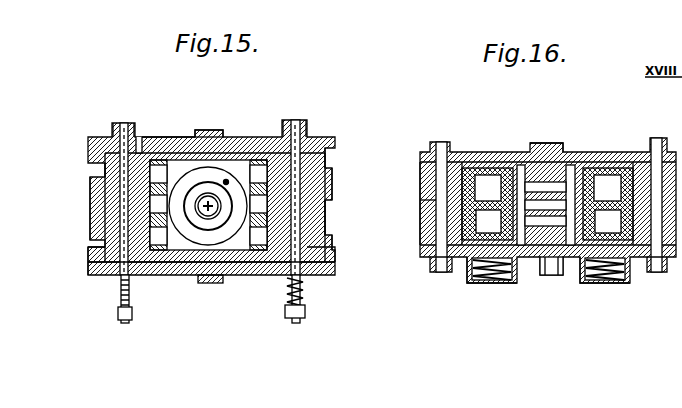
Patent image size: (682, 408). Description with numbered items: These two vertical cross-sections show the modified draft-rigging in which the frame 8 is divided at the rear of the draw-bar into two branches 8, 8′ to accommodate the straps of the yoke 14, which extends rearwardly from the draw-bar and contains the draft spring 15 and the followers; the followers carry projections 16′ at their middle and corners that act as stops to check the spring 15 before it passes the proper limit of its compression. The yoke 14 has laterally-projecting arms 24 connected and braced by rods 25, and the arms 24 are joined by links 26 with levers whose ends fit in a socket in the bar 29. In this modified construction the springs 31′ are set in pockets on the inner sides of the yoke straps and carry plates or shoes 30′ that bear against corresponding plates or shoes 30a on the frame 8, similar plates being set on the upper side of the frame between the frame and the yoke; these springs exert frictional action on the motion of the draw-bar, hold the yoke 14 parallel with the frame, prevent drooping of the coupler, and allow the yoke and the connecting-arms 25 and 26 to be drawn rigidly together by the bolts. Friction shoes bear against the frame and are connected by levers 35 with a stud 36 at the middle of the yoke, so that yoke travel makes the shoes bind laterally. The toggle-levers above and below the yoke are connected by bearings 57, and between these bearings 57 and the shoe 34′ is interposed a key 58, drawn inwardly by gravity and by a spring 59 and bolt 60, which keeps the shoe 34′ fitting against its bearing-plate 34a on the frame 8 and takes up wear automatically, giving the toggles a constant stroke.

In FIG. 15, the frame 8 is at (90, 240).
In FIG. 16, the frame 8 is at (487, 204).
In FIG. 15, the frame branch 8′ is at (326, 165).
In FIG. 16, the frame branch 8′ is at (608, 204).
In FIG. 15, the yoke 14 is at (190, 137).
In FIG. 16, the yoke 14 is at (568, 258).
In FIG. 15, the draft spring 15 is at (248, 275).
In FIG. 15, the projection 16′ is at (197, 275).
In FIG. 16, the laterally-projecting arm 24 is at (483, 152).
In FIG. 15, the rod 25 is at (90, 212).
In FIG. 16, the rod 25 is at (421, 184).
In FIG. 16, the link 26 is at (421, 207).
In FIG. 16, the bar 29 is at (544, 276).
In FIG. 16, the plate or shoe 30a is at (507, 152).
In FIG. 16, the plate or shoe 30′ is at (590, 152).
In FIG. 16, the spring 31′ is at (490, 283).
In FIG. 15, the bearing-plate 34a is at (155, 150).
In FIG. 15, the shoe 34′ is at (332, 186).
In FIG. 15, the lever 35 is at (236, 148).
In FIG. 15, the stud 36 is at (207, 135).
In FIG. 15, the bearing 57 is at (96, 170).
In FIG. 15, the key 58 is at (127, 123).
In FIG. 15, the spring 59 is at (121, 290).
In FIG. 15, the bolt 60 is at (133, 312).